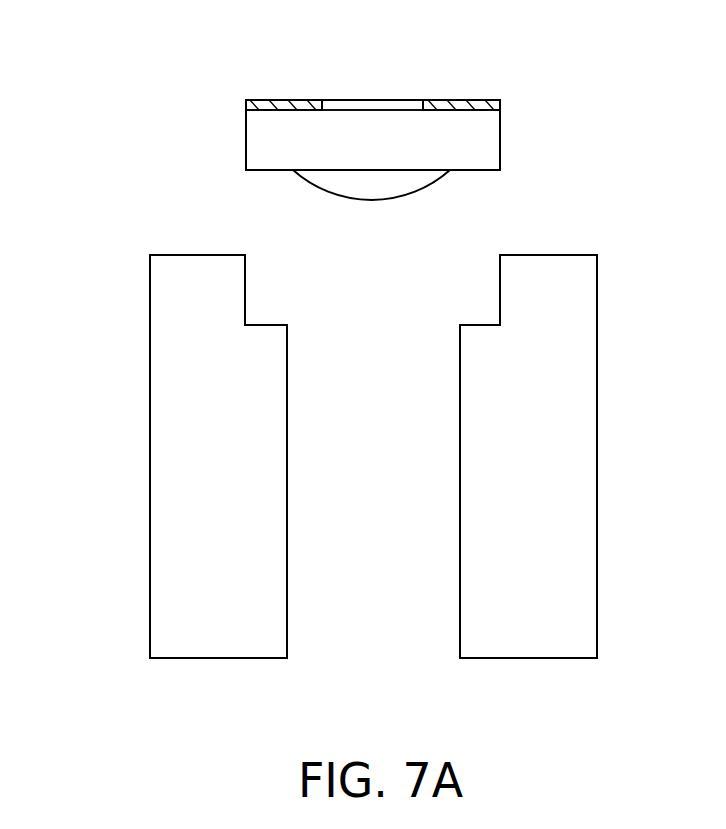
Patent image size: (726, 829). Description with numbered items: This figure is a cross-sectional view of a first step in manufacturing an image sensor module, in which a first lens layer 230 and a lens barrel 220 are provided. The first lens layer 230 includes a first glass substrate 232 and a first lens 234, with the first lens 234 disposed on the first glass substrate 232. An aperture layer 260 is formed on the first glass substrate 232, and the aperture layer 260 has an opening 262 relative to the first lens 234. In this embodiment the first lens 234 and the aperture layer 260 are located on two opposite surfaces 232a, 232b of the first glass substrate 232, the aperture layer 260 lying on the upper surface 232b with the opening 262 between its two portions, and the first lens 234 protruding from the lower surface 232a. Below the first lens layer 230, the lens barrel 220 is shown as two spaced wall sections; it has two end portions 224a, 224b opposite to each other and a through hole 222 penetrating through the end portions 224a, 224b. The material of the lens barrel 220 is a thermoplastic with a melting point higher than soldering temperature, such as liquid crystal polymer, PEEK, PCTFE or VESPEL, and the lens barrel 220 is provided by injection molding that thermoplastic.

The lens barrel 220 is at (170, 315).
The through hole 222 is at (301, 414).
The end portion 224a is at (549, 254).
The end portion 224b is at (525, 660).
The first lens layer 230 is at (128, 82).
The first glass substrate 232 is at (253, 118).
The surface 232a is at (470, 172).
The surface 232b is at (392, 108).
The first lens 234 is at (312, 183).
The aperture layer 260 is at (469, 106).
The opening 262 is at (334, 103).